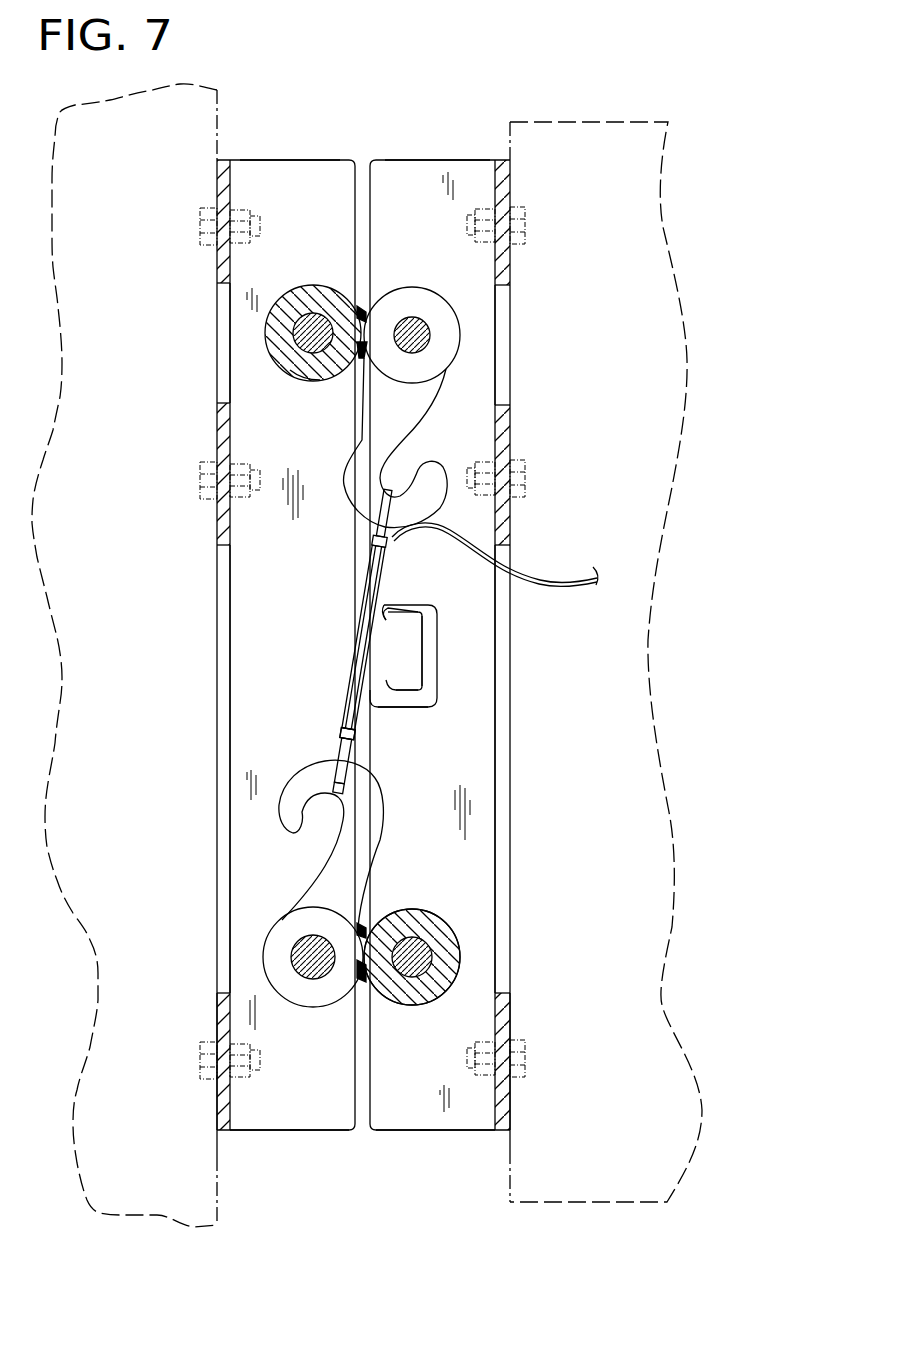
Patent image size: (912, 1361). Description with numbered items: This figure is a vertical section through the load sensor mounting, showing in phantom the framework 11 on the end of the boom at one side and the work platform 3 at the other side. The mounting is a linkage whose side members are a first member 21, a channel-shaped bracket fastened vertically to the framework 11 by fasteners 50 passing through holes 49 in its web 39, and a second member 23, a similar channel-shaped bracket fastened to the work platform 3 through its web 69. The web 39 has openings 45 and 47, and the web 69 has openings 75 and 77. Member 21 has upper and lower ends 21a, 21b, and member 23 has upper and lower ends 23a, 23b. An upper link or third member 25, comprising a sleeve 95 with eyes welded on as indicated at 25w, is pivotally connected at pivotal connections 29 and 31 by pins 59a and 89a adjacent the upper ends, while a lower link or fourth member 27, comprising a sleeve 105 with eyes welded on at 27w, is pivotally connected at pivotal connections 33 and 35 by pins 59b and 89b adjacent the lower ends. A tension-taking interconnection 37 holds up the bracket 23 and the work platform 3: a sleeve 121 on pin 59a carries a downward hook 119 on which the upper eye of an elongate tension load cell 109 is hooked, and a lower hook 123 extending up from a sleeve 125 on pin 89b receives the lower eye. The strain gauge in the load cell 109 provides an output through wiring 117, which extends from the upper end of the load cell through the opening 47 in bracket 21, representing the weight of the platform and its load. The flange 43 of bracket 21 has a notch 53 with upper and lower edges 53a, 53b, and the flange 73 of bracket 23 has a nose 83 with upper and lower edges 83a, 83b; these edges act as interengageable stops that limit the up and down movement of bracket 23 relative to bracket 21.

The work platform 3 is at (153, 1217).
The framework 11 is at (583, 1203).
The first member 21 is at (512, 518).
The upper end of first member 21a is at (465, 160).
The lower end of first member 21b is at (467, 1130).
The second member 23 is at (214, 522).
The upper end of second member 23a is at (267, 160).
The lower end of second member 23b is at (257, 1130).
The third member 25 is at (250, 298).
The welding 25w is at (360, 362).
The fourth member 27 is at (470, 975).
The welding 27w is at (358, 928).
The pivotal connection 29 is at (478, 282).
The pivotal connection 31 is at (317, 286).
The pivotal connection 33 is at (420, 1012).
The pivotal connection 35 is at (251, 981).
The interconnection 37 is at (358, 627).
The web 39 is at (507, 1003).
The flange 43 is at (393, 1120).
The opening 45 is at (503, 372).
The opening 47 is at (503, 690).
The holes 49 is at (507, 1035).
The fasteners 50 is at (522, 224).
The notch 53 is at (366, 655).
The upper horizontal edge of notch 53a is at (403, 602).
The lower horizontal edge of notch 53b is at (390, 710).
The pin 59a is at (430, 333).
The pin 59b is at (413, 960).
The web 69 is at (216, 1017).
The flange 73 is at (308, 1120).
The opening 75 is at (217, 300).
The opening 77 is at (220, 737).
The nose 83 is at (423, 643).
The upper horizontal edge of nose 83a is at (397, 615).
The lower horizontal edge of nose 83b is at (390, 679).
The pin 89a is at (312, 338).
The pin 89b is at (312, 955).
The sleeve 95 is at (312, 372).
The sleeve 105 is at (455, 938).
The tension load cell 109 is at (340, 738).
The wiring 117 is at (540, 583).
The hook 119 is at (432, 468).
The sleeve 121 is at (430, 302).
The hook 123 is at (298, 830).
The sleeve 125 is at (282, 928).